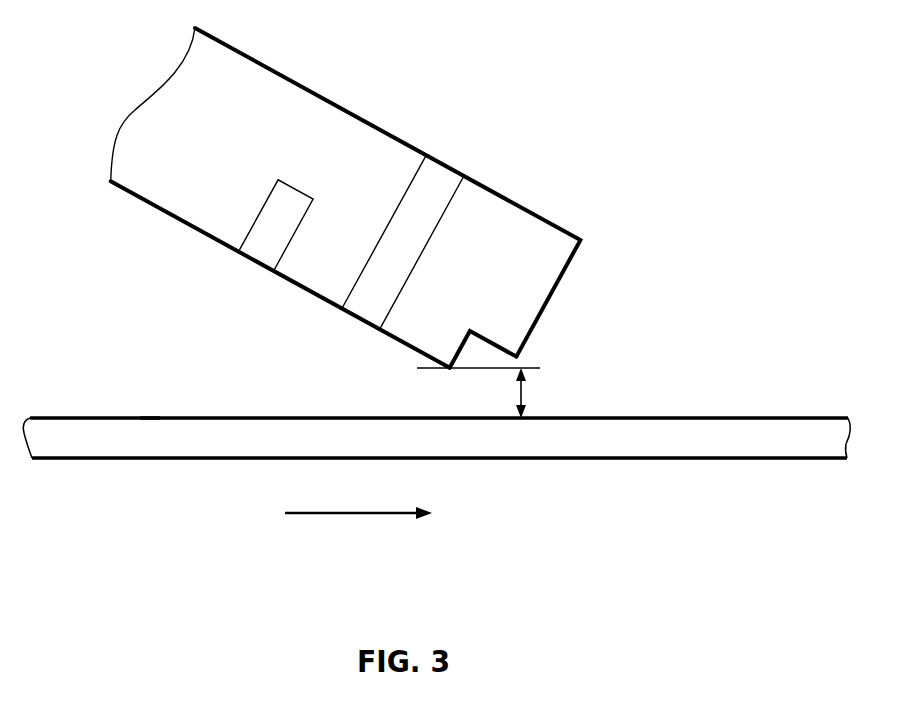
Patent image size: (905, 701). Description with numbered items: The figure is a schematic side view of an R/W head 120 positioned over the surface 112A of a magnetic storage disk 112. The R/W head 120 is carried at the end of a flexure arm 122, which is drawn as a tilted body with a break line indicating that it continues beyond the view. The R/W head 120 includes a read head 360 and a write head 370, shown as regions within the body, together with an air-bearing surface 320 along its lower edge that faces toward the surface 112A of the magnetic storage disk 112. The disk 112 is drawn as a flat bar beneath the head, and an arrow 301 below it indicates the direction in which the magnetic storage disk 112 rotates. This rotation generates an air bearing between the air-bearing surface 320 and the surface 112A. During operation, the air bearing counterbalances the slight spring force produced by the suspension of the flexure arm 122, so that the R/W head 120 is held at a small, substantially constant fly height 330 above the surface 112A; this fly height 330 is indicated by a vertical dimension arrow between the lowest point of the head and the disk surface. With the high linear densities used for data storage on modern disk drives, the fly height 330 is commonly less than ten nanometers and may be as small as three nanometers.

The R/W head 120 is at (666, 86).
The flexure arm 122 is at (277, 72).
The air-bearing surface (ABS) 320 is at (180, 221).
The read head 360 is at (267, 248).
The write head 370 is at (435, 180).
The fly height 330 is at (525, 393).
The magnetic storage disk 112 is at (727, 451).
The surface of magnetic storage disk 112A is at (152, 418).
The arrow 301 is at (340, 513).